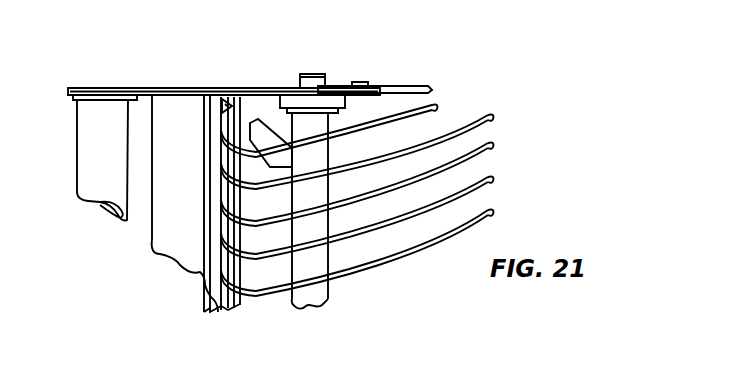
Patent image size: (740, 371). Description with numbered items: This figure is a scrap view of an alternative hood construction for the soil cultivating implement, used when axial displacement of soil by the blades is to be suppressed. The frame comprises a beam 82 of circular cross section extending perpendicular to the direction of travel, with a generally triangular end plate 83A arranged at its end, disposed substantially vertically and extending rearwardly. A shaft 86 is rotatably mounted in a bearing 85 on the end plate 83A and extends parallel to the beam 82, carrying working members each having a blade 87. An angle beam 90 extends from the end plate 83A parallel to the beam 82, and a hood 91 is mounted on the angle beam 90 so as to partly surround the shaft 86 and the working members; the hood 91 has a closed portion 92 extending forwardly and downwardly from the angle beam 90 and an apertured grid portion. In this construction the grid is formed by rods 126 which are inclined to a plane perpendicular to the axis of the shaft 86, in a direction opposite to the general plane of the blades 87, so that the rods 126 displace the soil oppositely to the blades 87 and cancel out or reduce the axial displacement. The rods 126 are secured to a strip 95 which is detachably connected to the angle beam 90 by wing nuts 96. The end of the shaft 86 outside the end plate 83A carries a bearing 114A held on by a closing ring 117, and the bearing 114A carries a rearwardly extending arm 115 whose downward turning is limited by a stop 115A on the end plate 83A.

The beam 82 is at (82, 132).
The end plate 83A is at (144, 88).
The bearing 85 is at (337, 108).
The shaft 86 is at (330, 298).
The blade 87 is at (276, 159).
The angle beam 90 is at (210, 177).
The hood 91 is at (224, 219).
The closed portion 92 is at (153, 240).
The strip 95 is at (217, 311).
The wing nuts 96 is at (222, 113).
The bearing 114A is at (292, 97).
The arm 115 is at (400, 87).
The stop 115A is at (364, 82).
The closing ring 117 is at (302, 73).
The rods 126 is at (494, 113).